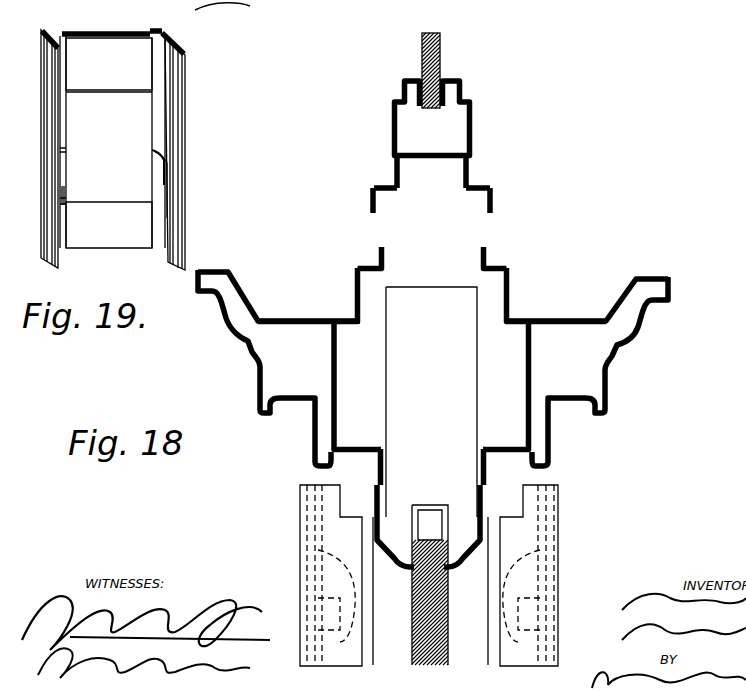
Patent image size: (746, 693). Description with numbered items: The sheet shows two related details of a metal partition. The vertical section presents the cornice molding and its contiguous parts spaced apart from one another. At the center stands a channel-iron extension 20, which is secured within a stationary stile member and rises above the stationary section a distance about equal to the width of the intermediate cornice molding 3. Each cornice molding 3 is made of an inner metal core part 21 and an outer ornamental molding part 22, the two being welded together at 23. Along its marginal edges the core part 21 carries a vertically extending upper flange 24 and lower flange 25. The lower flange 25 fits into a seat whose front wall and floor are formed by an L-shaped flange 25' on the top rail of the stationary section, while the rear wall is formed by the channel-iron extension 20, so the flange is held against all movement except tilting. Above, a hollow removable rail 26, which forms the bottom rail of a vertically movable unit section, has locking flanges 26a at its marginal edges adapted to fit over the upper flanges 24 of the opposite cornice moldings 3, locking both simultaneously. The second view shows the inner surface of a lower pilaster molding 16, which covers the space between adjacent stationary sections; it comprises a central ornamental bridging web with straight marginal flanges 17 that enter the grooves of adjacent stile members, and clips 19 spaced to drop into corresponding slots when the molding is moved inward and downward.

In FIG. 18, the intermediate cornice molding 3 is at (433, 327).
In FIG. 19, the lower pilaster molding 16 is at (109, 65).
In FIG. 18, the marginal flange 17 is at (300, 553).
In FIG. 19, the clip 19 is at (172, 182).
In FIG. 18, the clip 19 is at (300, 655).
In FIG. 18, the channel-iron extension 20 is at (431, 402).
In FIG. 18, the inner metal core part 21 is at (330, 380).
In FIG. 18, the outer ornamental molding part 22 is at (248, 343).
In FIG. 18, the weld 23 is at (352, 318).
In FIG. 18, the upper flange 24 is at (500, 259).
In FIG. 18, the lower flange 25 is at (429, 526).
In FIG. 18, the L-shaped flange 25' is at (430, 474).
In FIG. 18, the removable rail 26 is at (392, 120).
In FIG. 18, the locking flange 26a is at (372, 200).